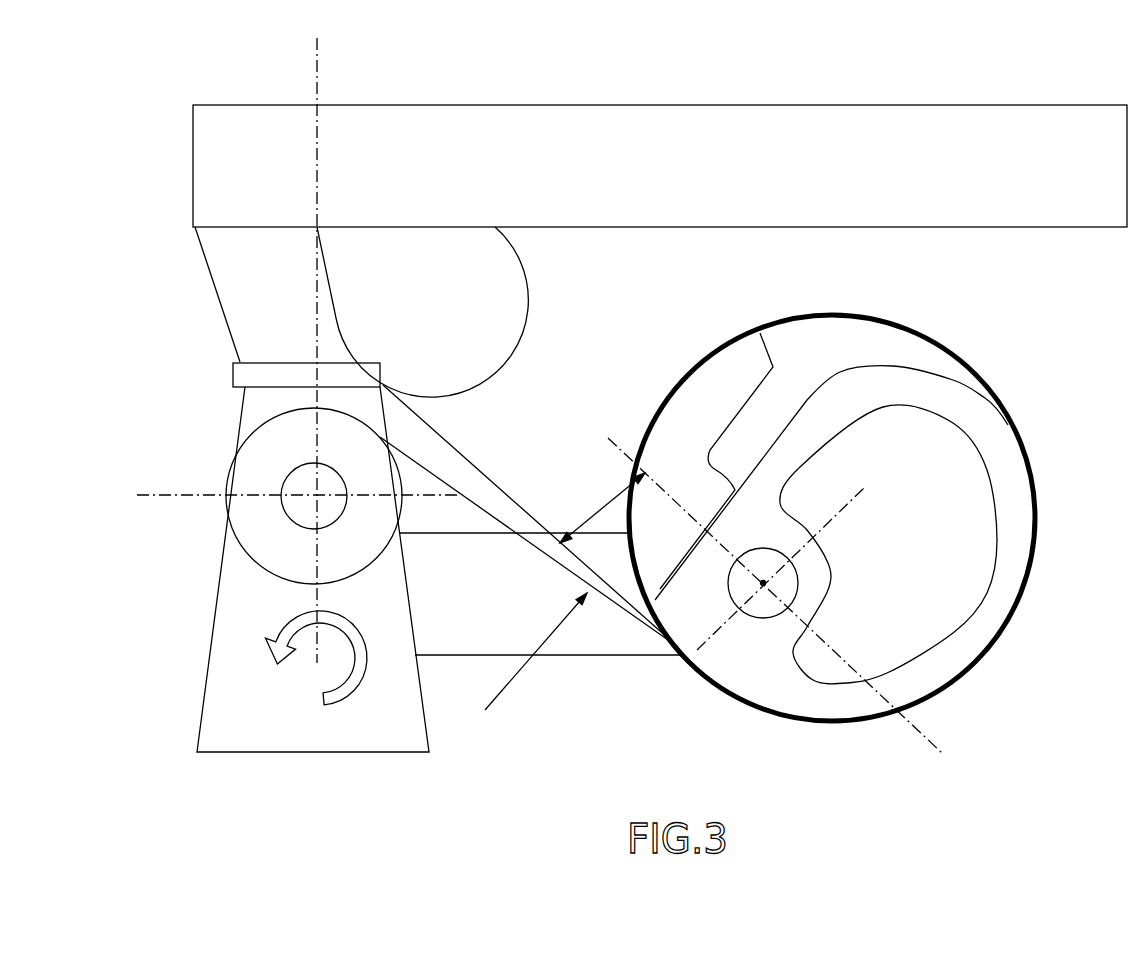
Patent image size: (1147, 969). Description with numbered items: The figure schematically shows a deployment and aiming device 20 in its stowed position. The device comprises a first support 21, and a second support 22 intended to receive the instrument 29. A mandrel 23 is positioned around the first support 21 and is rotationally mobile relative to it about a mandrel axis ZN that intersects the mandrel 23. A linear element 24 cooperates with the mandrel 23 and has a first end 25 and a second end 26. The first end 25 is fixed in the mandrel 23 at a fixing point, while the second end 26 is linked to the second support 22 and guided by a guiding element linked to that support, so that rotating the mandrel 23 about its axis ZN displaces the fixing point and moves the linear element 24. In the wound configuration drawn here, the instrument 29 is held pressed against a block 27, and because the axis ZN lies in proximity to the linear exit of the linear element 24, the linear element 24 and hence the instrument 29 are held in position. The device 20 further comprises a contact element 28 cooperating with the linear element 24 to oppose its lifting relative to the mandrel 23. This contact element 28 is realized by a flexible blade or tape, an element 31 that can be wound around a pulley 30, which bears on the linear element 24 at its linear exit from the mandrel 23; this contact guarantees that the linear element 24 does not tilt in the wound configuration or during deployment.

The deployment and aiming device 20 is at (170, 82).
The first support 21 is at (572, 657).
The second support 22 is at (198, 247).
The mandrel 23 is at (993, 442).
The linear element 24 is at (495, 480).
The first end 25 is at (685, 580).
The second end 26 is at (332, 317).
The block 27 is at (233, 363).
The contact element 28 is at (520, 666).
The instrument 29 is at (913, 105).
The pulley 30 is at (248, 520).
The windable element 31 is at (433, 475).
The mandrel axis ZN is at (763, 590).